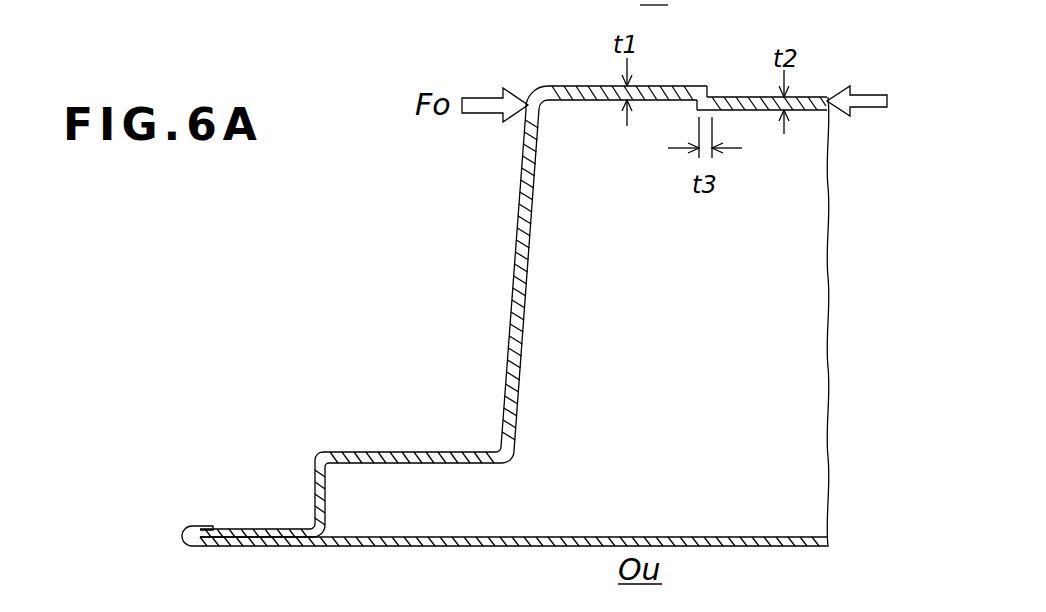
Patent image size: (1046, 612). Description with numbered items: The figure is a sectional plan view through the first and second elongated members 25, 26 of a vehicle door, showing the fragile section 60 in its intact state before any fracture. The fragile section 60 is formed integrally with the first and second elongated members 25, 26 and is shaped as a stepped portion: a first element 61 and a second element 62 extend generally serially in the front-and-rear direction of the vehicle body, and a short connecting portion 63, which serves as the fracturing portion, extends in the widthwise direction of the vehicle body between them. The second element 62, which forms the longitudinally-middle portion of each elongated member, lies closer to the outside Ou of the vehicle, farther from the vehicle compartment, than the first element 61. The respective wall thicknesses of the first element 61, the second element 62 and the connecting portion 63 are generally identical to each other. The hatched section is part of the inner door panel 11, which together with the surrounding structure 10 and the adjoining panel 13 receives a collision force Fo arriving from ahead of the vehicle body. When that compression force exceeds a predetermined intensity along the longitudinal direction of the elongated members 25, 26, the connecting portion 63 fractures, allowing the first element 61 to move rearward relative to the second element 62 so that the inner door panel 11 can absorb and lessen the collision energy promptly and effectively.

The vehicle body side structure 10 is at (352, 137).
The inner door panel 11 is at (508, 268).
The inner panel 13 is at (493, 546).
The first elongated member 25 is at (663, 123).
The second elongated member 26 is at (558, 84).
The fragile section 60 is at (718, 80).
The first element 61 is at (598, 102).
The second element 62 is at (758, 112).
The connecting portion 63 is at (697, 108).